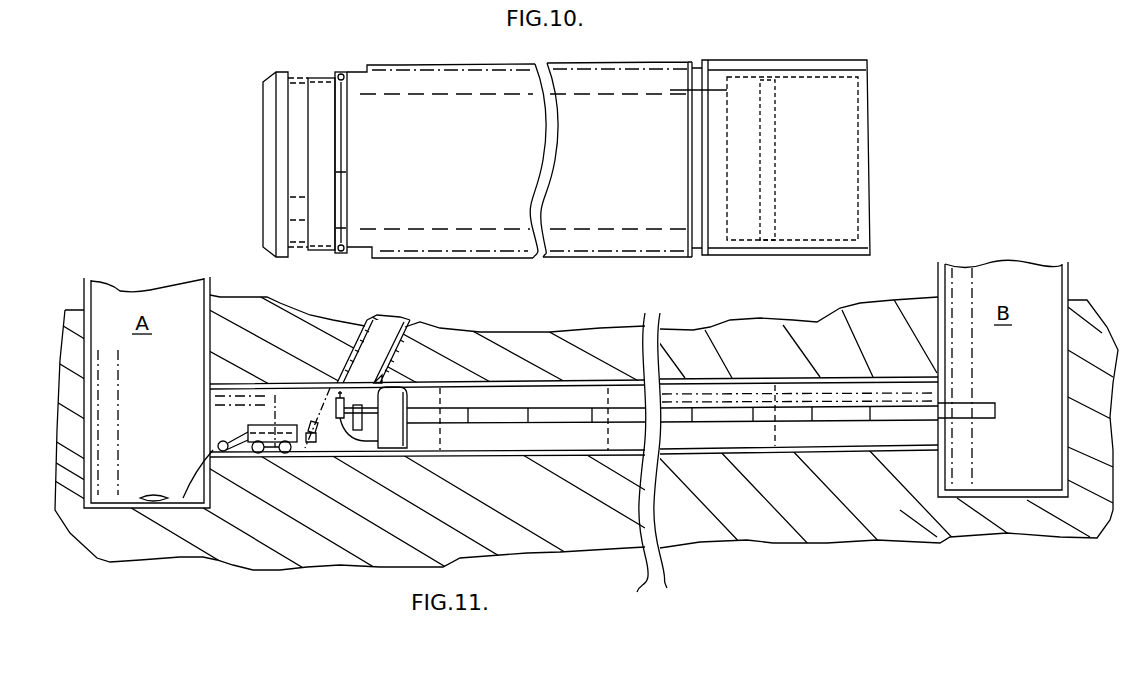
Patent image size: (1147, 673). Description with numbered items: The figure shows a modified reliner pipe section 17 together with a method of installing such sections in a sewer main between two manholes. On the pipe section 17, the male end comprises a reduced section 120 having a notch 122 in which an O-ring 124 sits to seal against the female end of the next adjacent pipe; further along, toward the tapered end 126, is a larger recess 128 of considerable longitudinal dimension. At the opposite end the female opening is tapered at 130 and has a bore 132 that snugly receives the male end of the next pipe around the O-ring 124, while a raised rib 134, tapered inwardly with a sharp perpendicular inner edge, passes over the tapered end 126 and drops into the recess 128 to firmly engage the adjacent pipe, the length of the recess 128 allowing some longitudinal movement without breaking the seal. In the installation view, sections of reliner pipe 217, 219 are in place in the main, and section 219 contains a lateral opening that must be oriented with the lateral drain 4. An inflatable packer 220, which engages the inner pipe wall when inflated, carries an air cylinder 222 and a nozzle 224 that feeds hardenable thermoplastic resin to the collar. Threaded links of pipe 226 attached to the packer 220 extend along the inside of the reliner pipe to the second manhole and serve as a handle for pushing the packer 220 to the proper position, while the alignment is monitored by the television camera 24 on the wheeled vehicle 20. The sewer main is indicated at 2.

In FIG. 11, the pipe string 2 is at (526, 381).
In FIG. 11, the lateral drain 4 is at (363, 350).
In FIG. 10, the reliner pipe section 17 is at (466, 170).
In FIG. 11, the vehicle 20 is at (267, 459).
In FIG. 11, the television camera 24 is at (310, 449).
In FIG. 10, the reduced section 120 is at (370, 68).
In FIG. 10, the notch 122 is at (352, 93).
In FIG. 10, the O-ring 124 is at (342, 74).
In FIG. 10, the tapered end 126 is at (268, 82).
In FIG. 10, the recess 128 is at (304, 78).
In FIG. 10, the taper of female opening 130 is at (868, 80).
In FIG. 10, the bore 132 is at (835, 238).
In FIG. 10, the raised rib 134 is at (762, 78).
In FIG. 11, the reliner pipe section 217 is at (470, 448).
In FIG. 11, the reliner pipe section 219 is at (285, 406).
In FIG. 11, the inflatable packer 220 is at (414, 386).
In FIG. 11, the air cylinder 222 is at (343, 420).
In FIG. 11, the nozzle 224 is at (354, 430).
In FIG. 11, the links of pipe 226 is at (441, 386).